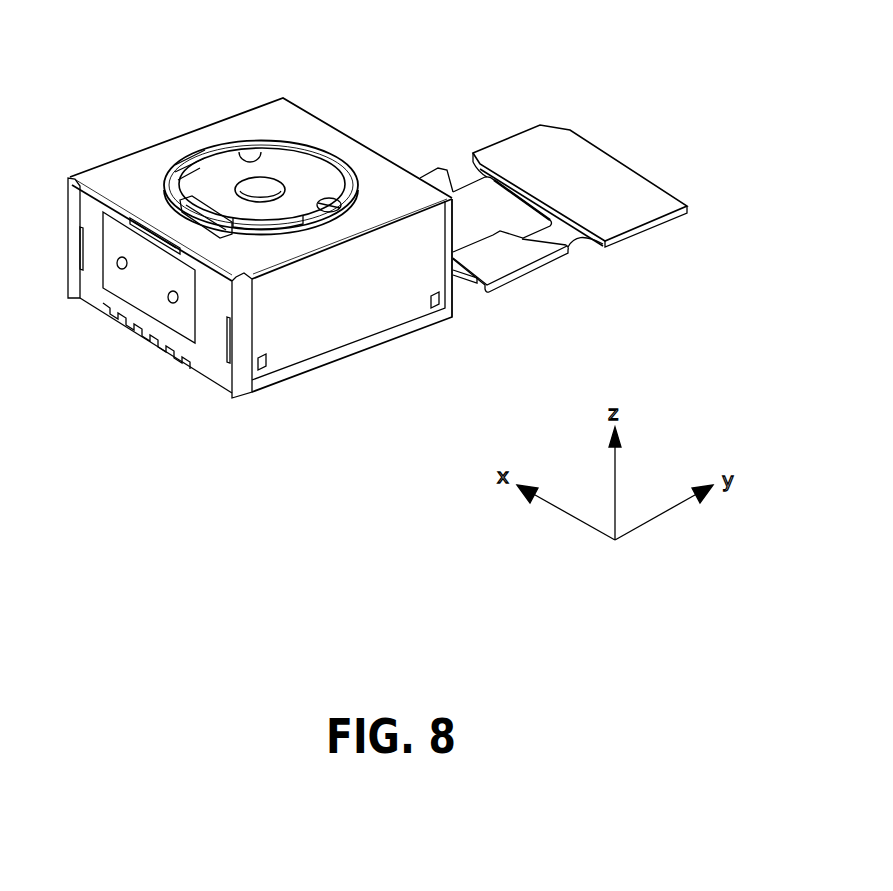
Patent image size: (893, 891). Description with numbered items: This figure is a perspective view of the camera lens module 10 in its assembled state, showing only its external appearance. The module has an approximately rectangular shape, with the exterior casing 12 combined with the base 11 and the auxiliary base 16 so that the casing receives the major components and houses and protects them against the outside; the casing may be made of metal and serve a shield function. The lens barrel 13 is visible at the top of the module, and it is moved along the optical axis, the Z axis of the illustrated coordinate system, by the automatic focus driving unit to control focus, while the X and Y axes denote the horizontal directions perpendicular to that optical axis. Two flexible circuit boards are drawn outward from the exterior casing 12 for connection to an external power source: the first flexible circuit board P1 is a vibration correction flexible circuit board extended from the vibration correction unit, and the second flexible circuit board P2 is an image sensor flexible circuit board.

The camera lens module 10 is at (370, 245).
The base 11 is at (330, 357).
The exterior casing 12 is at (184, 150).
The lens barrel 13 is at (288, 177).
The auxiliary base 16 is at (140, 292).
The first flexible circuit board P1 is at (487, 207).
The second flexible circuit board P2 is at (503, 258).